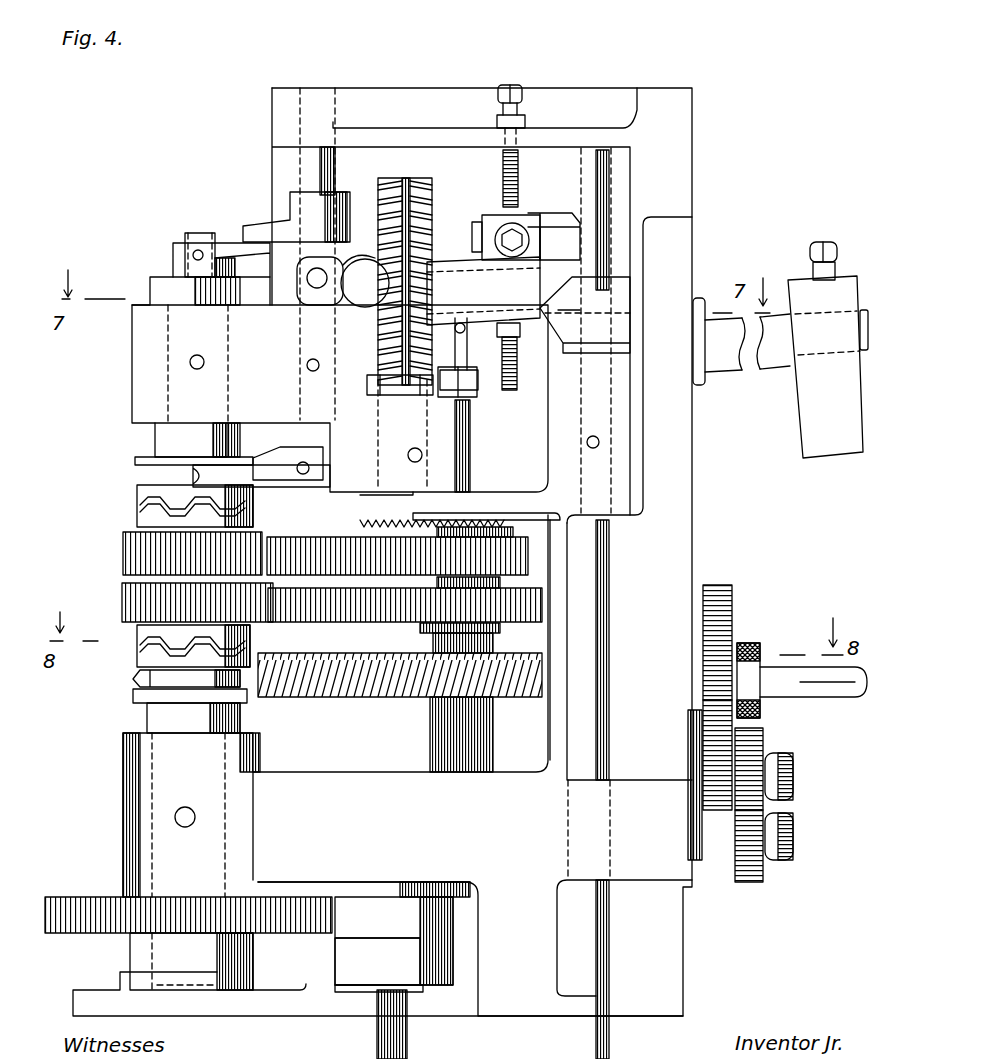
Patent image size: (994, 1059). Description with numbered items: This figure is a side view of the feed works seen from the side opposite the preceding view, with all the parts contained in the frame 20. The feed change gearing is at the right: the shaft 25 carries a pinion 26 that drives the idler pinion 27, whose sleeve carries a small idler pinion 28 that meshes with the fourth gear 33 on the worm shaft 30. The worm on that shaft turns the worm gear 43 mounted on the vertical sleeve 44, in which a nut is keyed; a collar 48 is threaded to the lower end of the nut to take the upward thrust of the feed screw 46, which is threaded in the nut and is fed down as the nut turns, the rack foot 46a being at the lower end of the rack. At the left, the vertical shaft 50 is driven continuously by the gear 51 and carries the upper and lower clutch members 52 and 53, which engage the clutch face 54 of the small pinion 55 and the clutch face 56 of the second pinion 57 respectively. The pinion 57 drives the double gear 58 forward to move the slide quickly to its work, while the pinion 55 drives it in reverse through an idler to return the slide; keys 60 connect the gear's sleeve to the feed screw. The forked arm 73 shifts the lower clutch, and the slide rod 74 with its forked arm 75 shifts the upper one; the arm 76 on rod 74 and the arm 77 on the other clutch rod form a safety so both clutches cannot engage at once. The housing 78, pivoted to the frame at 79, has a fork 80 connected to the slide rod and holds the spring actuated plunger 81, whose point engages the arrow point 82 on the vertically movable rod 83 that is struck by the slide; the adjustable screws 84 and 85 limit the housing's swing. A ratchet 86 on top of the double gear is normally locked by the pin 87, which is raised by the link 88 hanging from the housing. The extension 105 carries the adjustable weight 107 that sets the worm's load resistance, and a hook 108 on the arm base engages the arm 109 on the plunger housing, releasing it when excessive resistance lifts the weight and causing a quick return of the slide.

The frame 20 is at (696, 472).
The shaft 25 is at (793, 832).
The pinion 26 is at (748, 884).
The idler pinion 27 is at (758, 762).
The small idler pinion 28 is at (710, 790).
The worm shaft 30 is at (783, 675).
The fourth gear 33 is at (733, 588).
The worm gear 43 is at (355, 680).
The sleeve 44 is at (361, 937).
The feed screw 46 is at (397, 200).
The rack foot 46a is at (367, 388).
The collar 48 is at (377, 961).
The vertical shaft 50 is at (180, 273).
The gear 51 is at (72, 897).
The upper clutch member 52 is at (155, 440).
The lower clutch member 53 is at (133, 697).
The clutch face 54 is at (137, 506).
The small pinion 55 is at (123, 549).
The clutch face 56 is at (137, 642).
The second pinion 57 is at (122, 597).
The double gear 58 is at (593, 590).
The keys 60 is at (457, 398).
The forked arm 73 is at (133, 679).
The slide rod 74 is at (307, 158).
The forked arm 75 is at (273, 448).
The arm 76 is at (262, 222).
The arm 77 is at (233, 250).
The housing 78 is at (483, 291).
The pivot 79 is at (362, 300).
The fork 80 is at (300, 292).
The spring actuated plunger 81 is at (483, 270).
The arrow point 82 is at (585, 315).
The vertically movable rod 83 is at (598, 613).
The adjustable screw 84 is at (520, 385).
The adjustable screw 85 is at (497, 116).
The ratchet 86 is at (493, 520).
The pin 87 is at (470, 423).
The link 88 is at (470, 348).
The extension 105 is at (772, 358).
The weight 107 is at (828, 350).
The hook 108 is at (558, 213).
The arm 109 is at (562, 243).